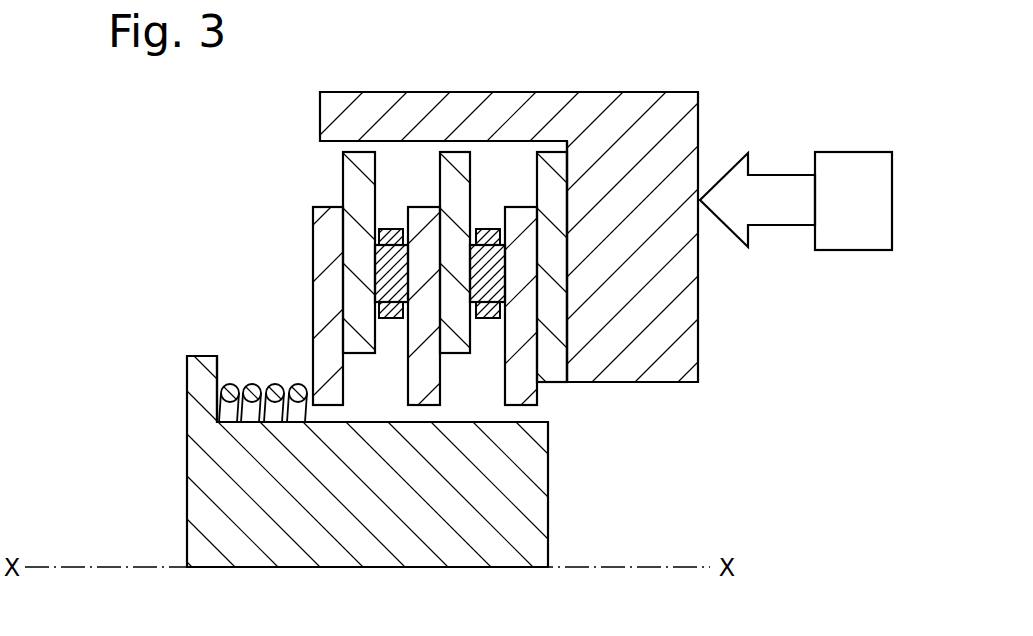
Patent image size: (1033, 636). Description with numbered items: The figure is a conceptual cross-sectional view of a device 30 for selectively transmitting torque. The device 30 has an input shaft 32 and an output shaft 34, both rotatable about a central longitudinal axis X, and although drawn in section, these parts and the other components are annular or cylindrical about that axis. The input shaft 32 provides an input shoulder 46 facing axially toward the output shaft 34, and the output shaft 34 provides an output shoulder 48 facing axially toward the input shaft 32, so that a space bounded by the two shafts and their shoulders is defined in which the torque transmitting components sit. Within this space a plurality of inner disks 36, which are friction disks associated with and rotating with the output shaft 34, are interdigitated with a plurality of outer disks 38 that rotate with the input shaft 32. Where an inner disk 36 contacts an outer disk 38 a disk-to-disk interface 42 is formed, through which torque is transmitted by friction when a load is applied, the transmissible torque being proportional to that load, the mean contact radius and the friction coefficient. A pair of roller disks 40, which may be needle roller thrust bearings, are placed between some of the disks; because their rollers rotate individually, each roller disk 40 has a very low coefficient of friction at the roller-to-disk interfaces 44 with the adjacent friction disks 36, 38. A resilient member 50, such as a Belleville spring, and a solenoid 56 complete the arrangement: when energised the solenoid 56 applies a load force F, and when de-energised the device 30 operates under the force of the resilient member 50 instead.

The device for selectively transmitting torque 30 is at (155, 195).
The input shaft 32 is at (665, 112).
The output shaft 34 is at (237, 502).
The inner disks 36 is at (322, 237).
The outer disks 38 is at (345, 178).
The roller disks 40 is at (389, 232).
The disk-to-disk interfaces 42 is at (343, 315).
The roller-to-disk interfaces 44 is at (375, 290).
The input shoulder 46 is at (567, 260).
The output shoulder 48 is at (223, 368).
The resilient member 50 is at (252, 383).
The solenoid 56 is at (858, 165).
The load force F is at (788, 185).